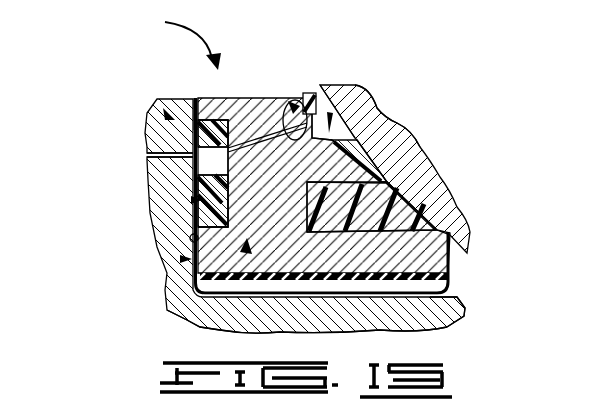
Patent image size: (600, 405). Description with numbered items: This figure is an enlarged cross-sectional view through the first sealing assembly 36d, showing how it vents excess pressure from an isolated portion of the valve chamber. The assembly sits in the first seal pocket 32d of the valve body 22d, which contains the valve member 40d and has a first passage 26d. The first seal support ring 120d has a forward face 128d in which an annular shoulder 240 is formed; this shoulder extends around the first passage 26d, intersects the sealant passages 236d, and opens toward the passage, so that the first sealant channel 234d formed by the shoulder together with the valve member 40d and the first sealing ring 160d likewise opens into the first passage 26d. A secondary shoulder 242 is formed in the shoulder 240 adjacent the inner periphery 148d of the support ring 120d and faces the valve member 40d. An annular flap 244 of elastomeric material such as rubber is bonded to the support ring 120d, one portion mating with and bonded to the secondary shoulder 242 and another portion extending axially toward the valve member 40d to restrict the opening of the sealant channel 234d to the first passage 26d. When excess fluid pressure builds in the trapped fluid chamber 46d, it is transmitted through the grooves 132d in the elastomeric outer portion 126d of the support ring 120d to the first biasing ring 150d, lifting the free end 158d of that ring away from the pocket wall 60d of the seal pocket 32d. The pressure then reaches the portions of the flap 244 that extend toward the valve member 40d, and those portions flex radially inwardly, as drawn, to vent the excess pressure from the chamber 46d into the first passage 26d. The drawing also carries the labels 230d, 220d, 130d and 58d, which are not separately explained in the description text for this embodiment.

The first sealing assembly 36d is at (169, 42).
The first passage 26d is at (172, 57).
The seal ring 230d is at (197, 98).
The valve body 22d is at (165, 108).
The sealant passages 236d is at (200, 96).
The inner periphery 148d is at (250, 143).
The secondary shoulder 242 is at (290, 100).
The annular shoulder 240 is at (286, 100).
The annular flap 244 is at (310, 93).
The first sealant channel 234d is at (340, 90).
The forward face 128d is at (380, 115).
The first sealing ring 160d is at (403, 123).
The valve member 40d is at (427, 167).
The slit 220d is at (150, 155).
The free end 158d is at (191, 199).
The first biasing ring 150d is at (178, 202).
The pocket wall 60d is at (190, 238).
The first seal pocket 32d is at (181, 259).
The seal strip 130d is at (200, 276).
The first seal support ring 120d is at (190, 325).
The flow path 58d is at (246, 248).
The elastomeric outer portion 126d is at (352, 287).
The grooves 132d is at (413, 283).
The trapped fluid chamber 46d is at (495, 298).